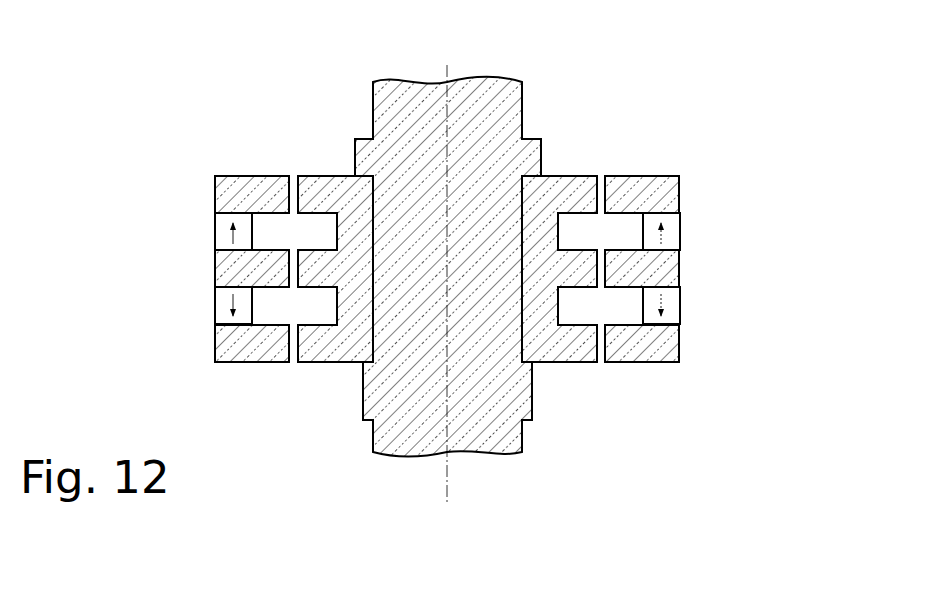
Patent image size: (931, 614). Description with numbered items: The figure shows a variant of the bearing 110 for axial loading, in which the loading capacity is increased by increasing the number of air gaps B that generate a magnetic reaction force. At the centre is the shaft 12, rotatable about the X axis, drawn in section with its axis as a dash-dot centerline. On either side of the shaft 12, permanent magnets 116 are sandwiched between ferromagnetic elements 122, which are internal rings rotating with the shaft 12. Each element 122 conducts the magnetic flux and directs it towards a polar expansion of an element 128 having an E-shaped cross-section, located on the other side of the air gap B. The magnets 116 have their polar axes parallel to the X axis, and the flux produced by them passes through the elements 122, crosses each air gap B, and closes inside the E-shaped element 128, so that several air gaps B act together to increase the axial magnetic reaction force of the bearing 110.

The shaft 12 is at (504, 130).
The bearing 110 is at (694, 79).
The permanent magnet 116 is at (218, 233).
The element 122 is at (238, 176).
The element 128 is at (318, 176).
The air gap B is at (605, 174).
The X axis X is at (450, 478).